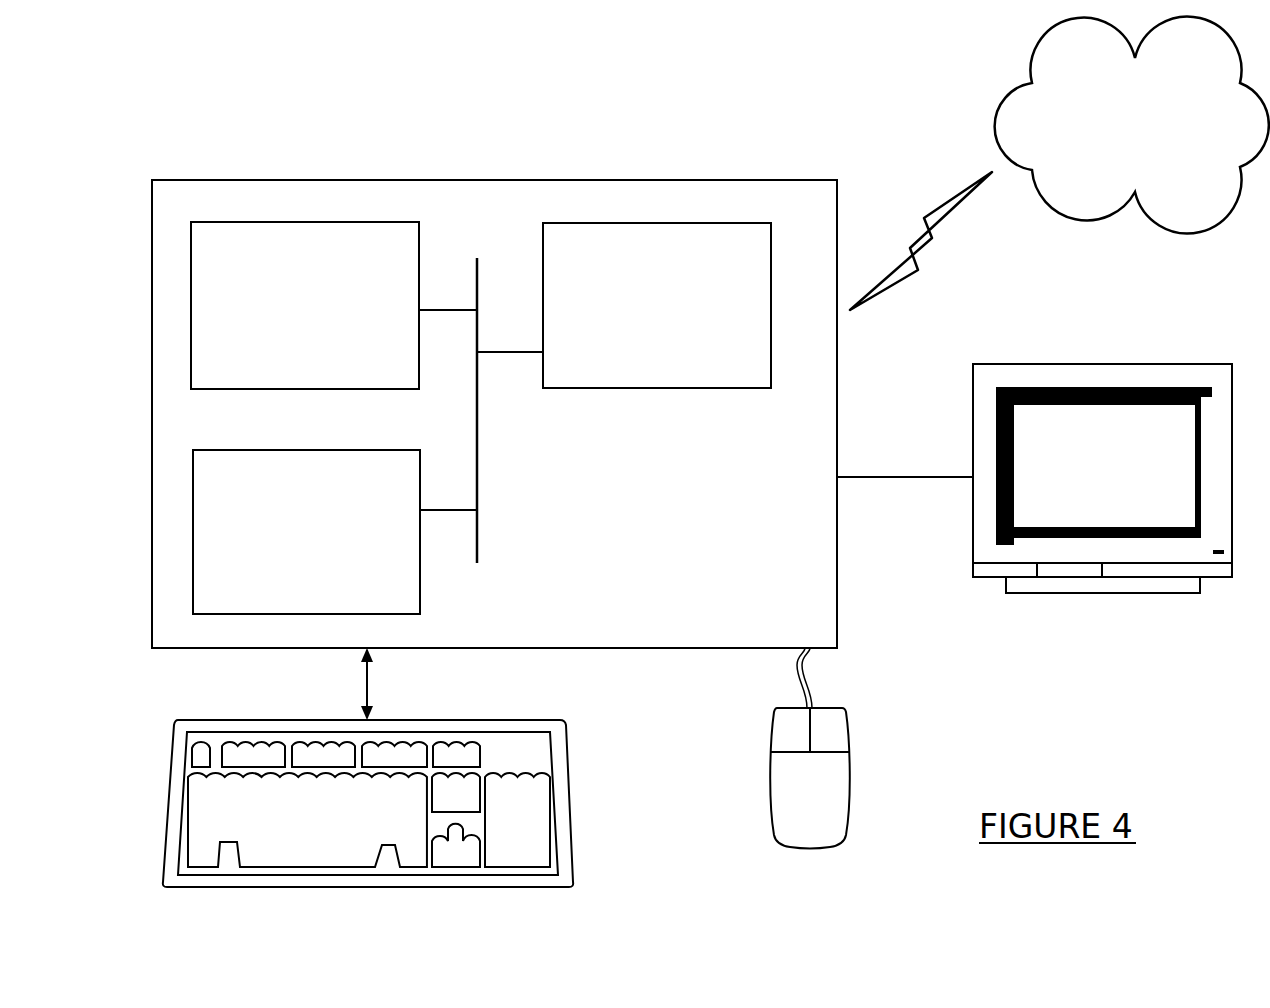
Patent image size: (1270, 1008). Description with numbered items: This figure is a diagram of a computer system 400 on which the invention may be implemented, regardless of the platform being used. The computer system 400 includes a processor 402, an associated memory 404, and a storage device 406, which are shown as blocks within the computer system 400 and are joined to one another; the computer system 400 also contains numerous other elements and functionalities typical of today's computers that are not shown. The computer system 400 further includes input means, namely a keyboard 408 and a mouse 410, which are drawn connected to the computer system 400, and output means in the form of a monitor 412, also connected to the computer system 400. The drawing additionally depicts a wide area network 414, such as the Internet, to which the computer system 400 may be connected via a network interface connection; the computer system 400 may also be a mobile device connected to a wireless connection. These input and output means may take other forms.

The computer system 400 is at (210, 146).
The processor 402 is at (699, 319).
The memory 404 is at (331, 318).
The storage device 406 is at (327, 546).
The keyboard 408 is at (322, 844).
The mouse 410 is at (833, 797).
The monitor 412 is at (1130, 472).
The WAN network 414 is at (1159, 159).